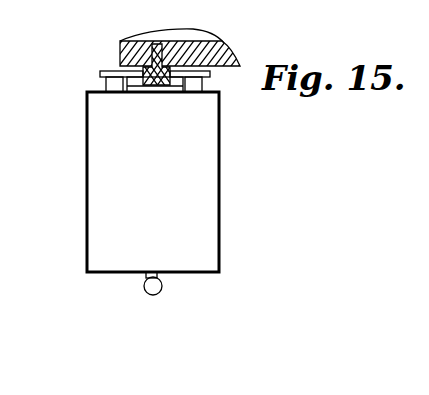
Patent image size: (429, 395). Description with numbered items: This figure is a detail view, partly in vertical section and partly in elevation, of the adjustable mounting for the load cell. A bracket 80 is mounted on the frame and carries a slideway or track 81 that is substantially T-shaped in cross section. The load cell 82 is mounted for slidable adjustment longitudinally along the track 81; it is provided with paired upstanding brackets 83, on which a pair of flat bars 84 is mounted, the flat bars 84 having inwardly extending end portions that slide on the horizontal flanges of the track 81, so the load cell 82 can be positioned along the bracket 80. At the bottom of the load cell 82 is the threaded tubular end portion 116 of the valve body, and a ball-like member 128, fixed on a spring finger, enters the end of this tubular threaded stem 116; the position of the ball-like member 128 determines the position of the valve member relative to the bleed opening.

The bracket 80 is at (125, 58).
The slideway or track 81 is at (152, 78).
The load cell 82 is at (208, 168).
The upstanding brackets 83 is at (113, 84).
The flat bars 84 is at (103, 73).
The threaded tubular end portion 116 is at (158, 275).
The ball-like member 128 is at (146, 290).